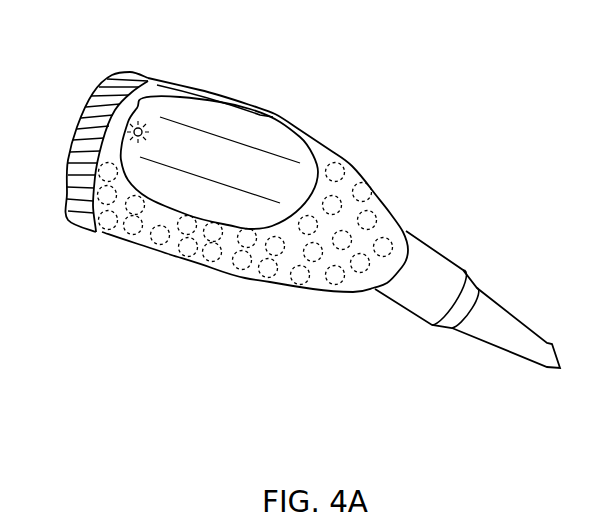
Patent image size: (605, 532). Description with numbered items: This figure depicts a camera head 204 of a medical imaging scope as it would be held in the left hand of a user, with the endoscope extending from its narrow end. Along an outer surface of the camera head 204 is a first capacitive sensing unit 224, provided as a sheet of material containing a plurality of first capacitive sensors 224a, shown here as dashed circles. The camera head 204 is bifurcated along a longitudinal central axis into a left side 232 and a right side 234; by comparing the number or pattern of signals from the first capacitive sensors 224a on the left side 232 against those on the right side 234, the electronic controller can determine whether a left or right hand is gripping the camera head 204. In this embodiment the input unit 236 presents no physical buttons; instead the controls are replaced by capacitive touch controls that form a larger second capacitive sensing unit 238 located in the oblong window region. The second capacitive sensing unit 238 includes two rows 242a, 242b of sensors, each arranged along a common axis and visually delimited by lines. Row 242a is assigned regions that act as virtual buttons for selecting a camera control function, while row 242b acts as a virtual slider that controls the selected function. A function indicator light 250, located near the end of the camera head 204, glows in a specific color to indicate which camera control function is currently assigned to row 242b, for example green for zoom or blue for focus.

The camera head 204 is at (418, 204).
The first capacitive sensing unit 224 is at (295, 252).
The first capacitive sensors 224a is at (363, 190).
The left side 232 is at (269, 366).
The right side 234 is at (351, 79).
The input unit 236 is at (228, 122).
The second capacitive sensing unit 238 is at (215, 101).
The first row of second capacitive sensors 242a is at (240, 140).
The second row of second capacitive sensors 242b is at (187, 173).
The function indicator light 250 is at (134, 128).